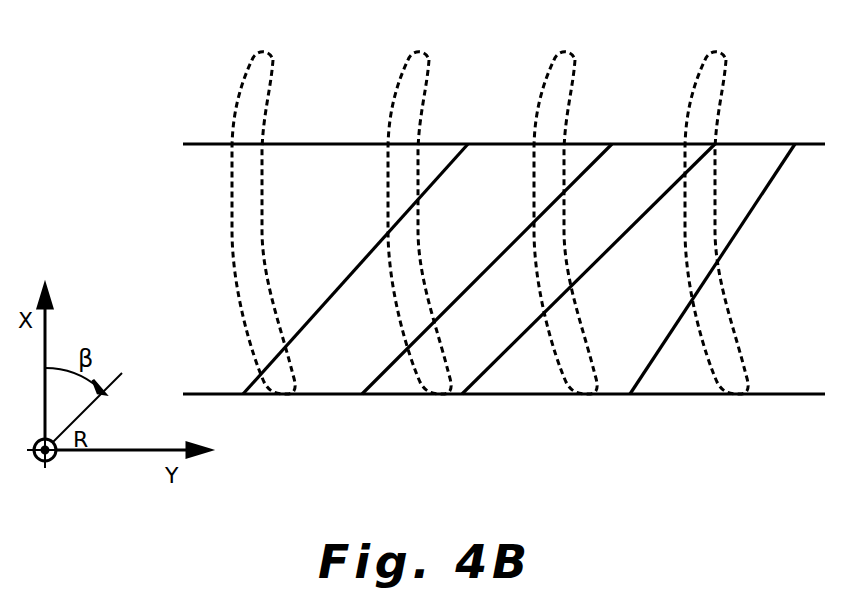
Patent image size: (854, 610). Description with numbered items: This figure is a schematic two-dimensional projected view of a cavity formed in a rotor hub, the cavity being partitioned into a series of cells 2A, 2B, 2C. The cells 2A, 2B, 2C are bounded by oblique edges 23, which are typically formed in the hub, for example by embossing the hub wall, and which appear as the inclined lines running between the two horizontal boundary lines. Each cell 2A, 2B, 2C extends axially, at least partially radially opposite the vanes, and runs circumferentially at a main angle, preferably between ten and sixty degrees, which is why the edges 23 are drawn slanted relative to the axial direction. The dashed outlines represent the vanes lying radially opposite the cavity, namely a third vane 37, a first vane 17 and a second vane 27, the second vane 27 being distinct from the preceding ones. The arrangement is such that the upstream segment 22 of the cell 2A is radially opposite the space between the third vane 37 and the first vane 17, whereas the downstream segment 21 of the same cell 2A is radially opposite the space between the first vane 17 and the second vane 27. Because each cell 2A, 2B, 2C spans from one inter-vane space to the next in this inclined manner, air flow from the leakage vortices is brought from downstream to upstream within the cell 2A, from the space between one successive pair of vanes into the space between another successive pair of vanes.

The first vane 17 is at (408, 110).
The downstream segment 21 is at (519, 162).
The upstream segment 22 is at (323, 367).
The edges 23 is at (353, 270).
The second vane 27 is at (560, 110).
The third vane 37 is at (258, 112).
The cell 2A is at (337, 380).
The cell 2B is at (413, 380).
The cell 2C is at (545, 380).